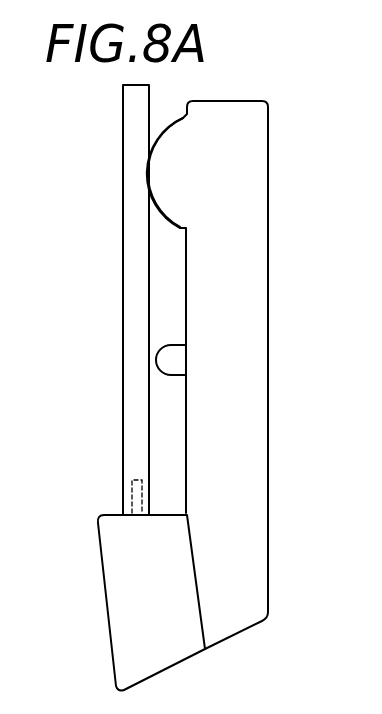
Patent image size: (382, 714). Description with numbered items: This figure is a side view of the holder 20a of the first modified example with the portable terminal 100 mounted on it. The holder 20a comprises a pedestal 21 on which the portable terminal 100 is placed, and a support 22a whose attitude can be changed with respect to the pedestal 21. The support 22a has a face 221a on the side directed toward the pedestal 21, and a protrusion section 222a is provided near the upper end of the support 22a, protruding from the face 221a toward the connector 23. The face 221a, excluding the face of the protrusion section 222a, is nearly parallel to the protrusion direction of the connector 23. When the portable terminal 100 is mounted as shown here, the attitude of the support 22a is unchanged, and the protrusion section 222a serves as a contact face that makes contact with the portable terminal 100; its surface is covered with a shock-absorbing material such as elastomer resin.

The portable terminal 100 is at (136, 105).
The holder 20a is at (284, 233).
The pedestal 21 is at (118, 620).
The support 22a is at (252, 493).
The face 221a is at (186, 375).
The protrusion section 222a is at (162, 172).
The connector 23 is at (123, 489).